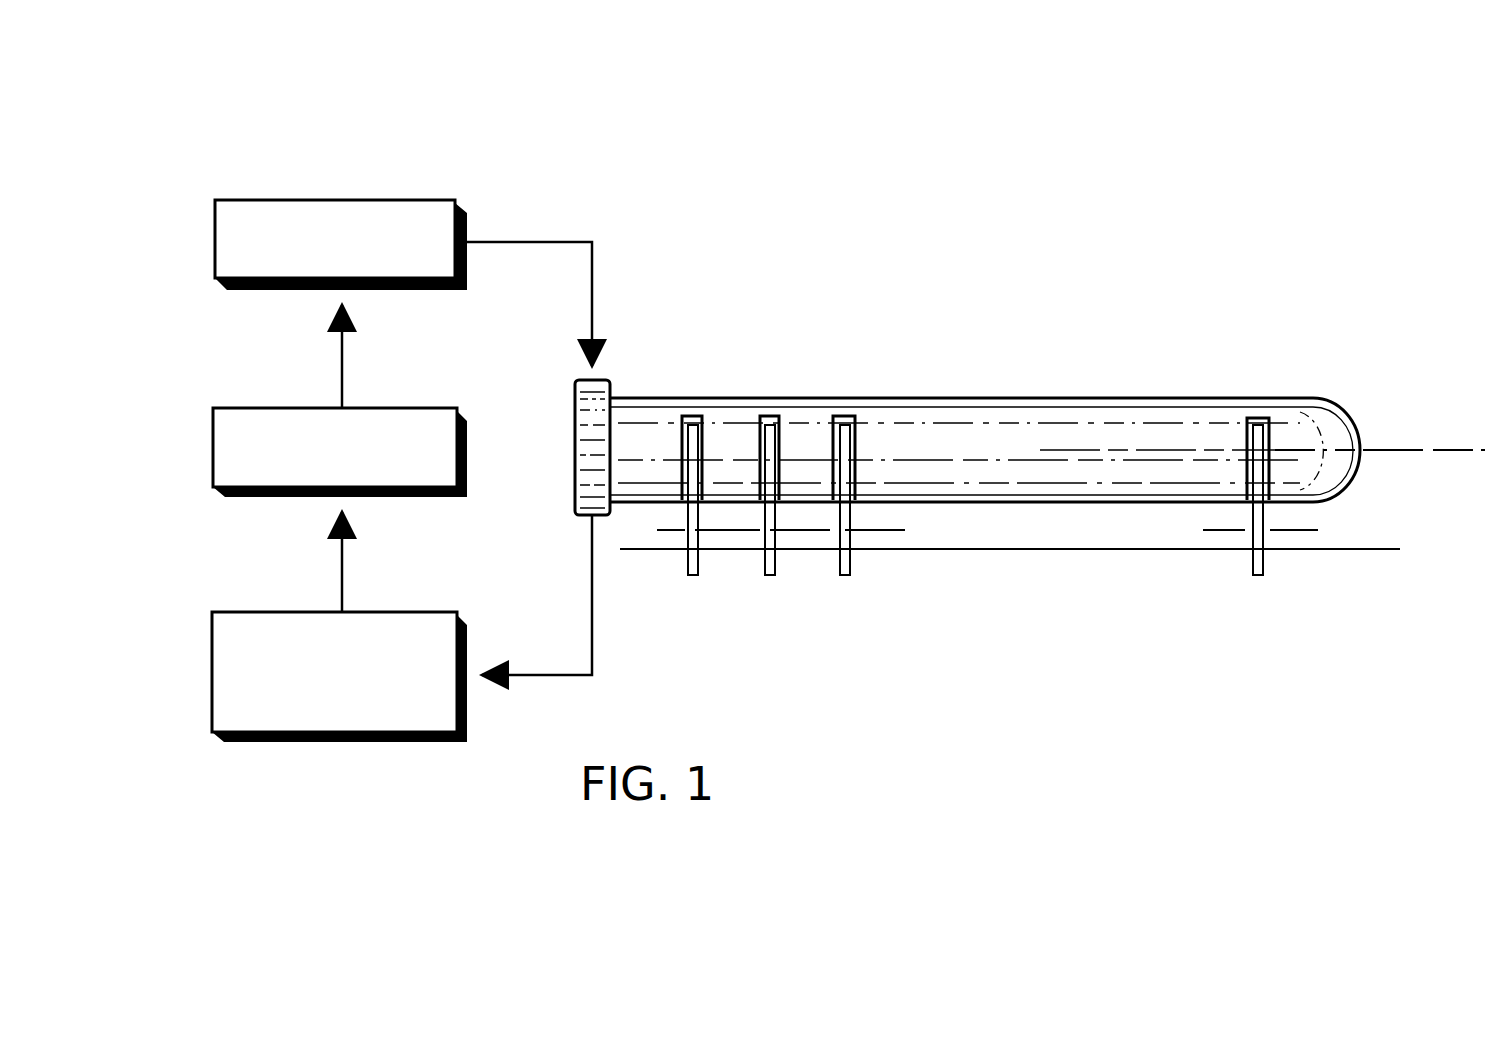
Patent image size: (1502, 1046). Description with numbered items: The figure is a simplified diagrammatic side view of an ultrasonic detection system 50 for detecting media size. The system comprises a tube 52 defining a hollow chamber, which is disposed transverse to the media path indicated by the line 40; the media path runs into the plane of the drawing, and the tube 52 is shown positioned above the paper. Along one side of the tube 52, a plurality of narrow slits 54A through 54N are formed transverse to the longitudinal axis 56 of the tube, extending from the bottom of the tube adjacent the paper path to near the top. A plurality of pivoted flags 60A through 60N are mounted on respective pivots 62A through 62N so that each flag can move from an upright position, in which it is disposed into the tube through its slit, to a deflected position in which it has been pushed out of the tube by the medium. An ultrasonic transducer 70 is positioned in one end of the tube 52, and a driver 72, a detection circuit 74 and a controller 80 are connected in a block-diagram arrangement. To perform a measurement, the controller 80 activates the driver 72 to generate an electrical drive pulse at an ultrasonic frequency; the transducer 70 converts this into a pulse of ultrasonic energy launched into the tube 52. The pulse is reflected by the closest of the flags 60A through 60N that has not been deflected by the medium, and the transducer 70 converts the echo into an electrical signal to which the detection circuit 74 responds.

The media path 40 is at (1373, 550).
The ultrasonic detection system 50 is at (1398, 281).
The tube 52 is at (615, 398).
The slit 54A is at (686, 434).
The slit 54N is at (1272, 438).
The longitudinal axis 56 is at (1388, 450).
The pivoted flag 60A is at (690, 520).
The pivoted flag 60N is at (1252, 512).
The pivot 62A is at (693, 528).
The pivot 62N is at (1262, 528).
The ultrasonic transducer 70 is at (583, 398).
The ultrasonic driver circuit 72 is at (268, 208).
The detection circuit 74 is at (228, 618).
The controller 80 is at (248, 417).